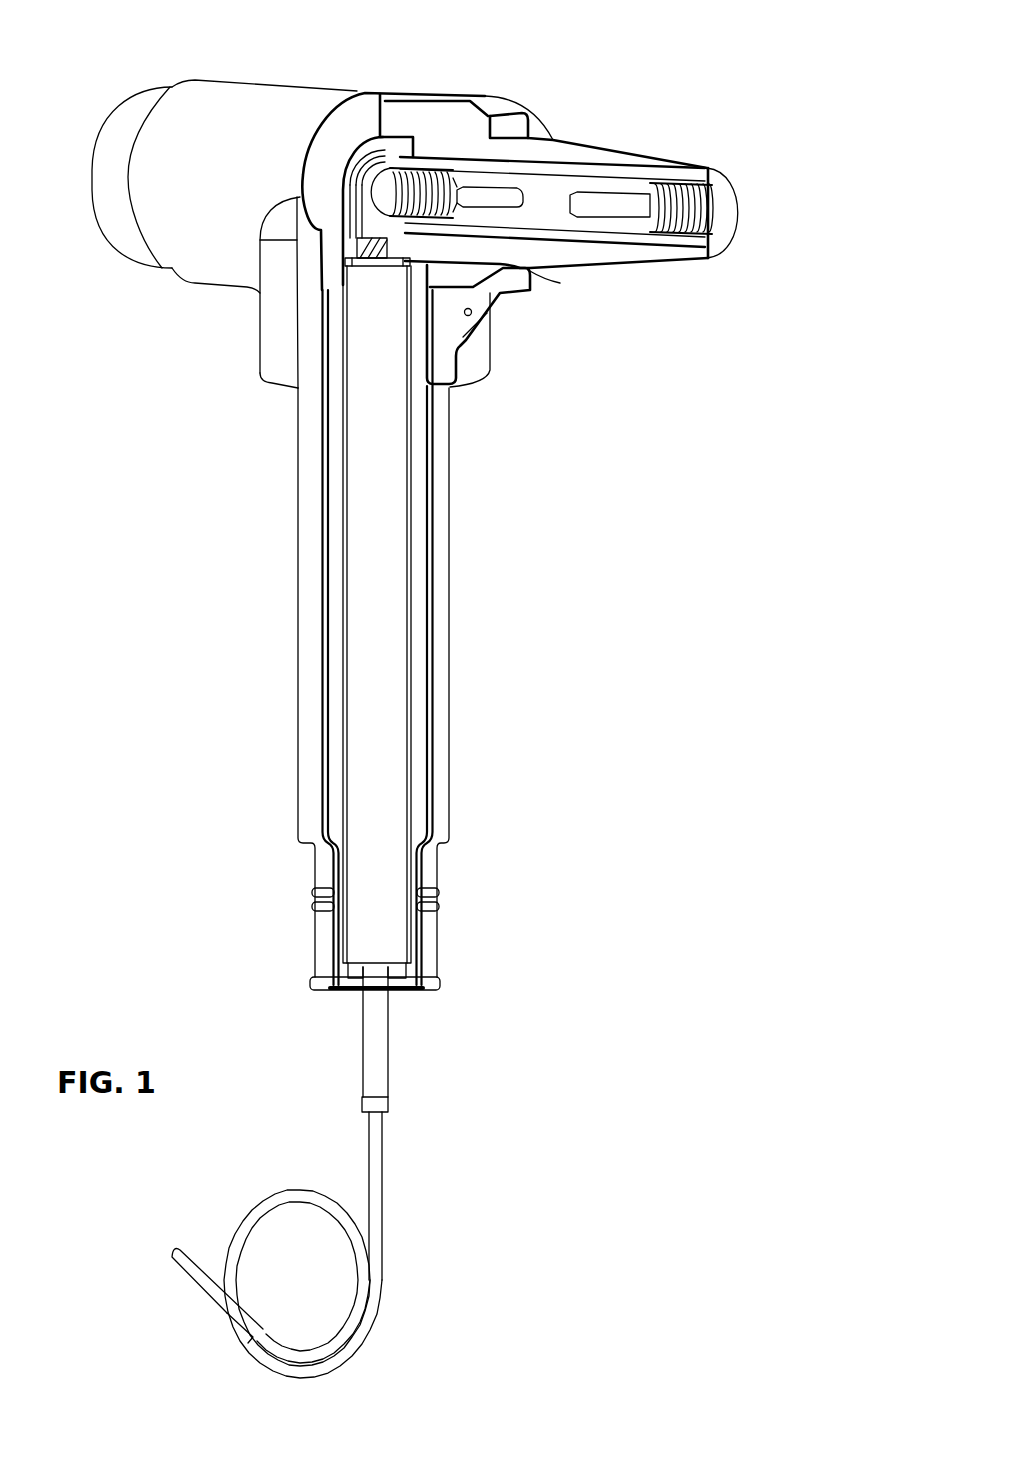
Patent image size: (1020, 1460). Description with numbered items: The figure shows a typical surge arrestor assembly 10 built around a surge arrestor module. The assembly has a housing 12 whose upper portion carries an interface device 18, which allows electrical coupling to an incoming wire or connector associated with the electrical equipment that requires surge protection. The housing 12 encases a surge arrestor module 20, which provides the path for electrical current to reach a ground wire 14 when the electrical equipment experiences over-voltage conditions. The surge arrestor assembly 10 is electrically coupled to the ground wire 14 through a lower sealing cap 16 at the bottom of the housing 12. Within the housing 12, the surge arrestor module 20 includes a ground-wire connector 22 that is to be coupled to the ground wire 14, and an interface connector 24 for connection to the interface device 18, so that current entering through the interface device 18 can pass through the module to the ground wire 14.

The surge arrestor assembly 10 is at (712, 46).
The housing 12 is at (282, 384).
The ground wire 14 is at (372, 1162).
The lower sealing cap 16 is at (347, 993).
The interface device 18 is at (538, 193).
The surge arrestor module 20 is at (400, 483).
The ground-wire connector 22 is at (390, 818).
The interface connector 24 is at (345, 150).